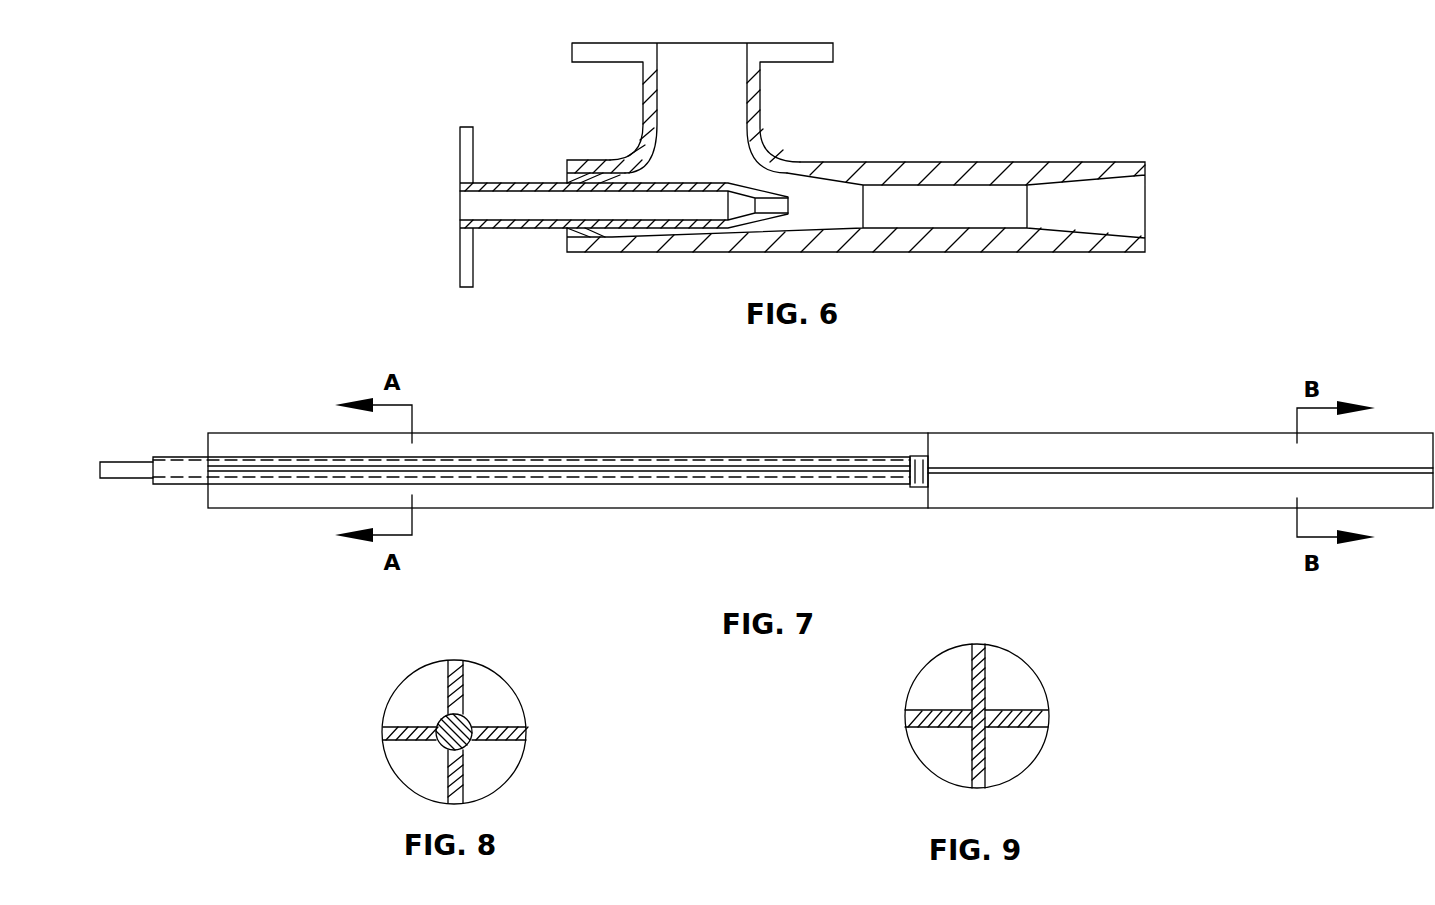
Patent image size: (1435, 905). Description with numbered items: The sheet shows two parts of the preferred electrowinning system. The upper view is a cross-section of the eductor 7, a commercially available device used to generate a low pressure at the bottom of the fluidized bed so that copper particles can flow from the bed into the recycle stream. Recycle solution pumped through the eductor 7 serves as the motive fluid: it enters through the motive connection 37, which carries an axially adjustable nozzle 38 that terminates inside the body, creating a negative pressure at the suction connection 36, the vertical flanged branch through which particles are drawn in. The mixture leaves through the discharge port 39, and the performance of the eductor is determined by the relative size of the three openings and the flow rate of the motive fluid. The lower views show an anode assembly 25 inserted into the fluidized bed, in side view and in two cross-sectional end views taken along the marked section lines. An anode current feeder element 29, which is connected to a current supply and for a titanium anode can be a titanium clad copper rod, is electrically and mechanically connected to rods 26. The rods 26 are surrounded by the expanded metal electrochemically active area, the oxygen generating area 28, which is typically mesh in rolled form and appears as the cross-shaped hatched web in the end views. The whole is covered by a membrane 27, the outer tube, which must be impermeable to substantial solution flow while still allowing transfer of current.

In FIG. 6, the eductor 7 is at (955, 70).
In FIG. 7, the anode assembly 25 is at (648, 554).
In FIG. 7, the rods 26 is at (473, 472).
In FIG. 8, the rods 26 is at (512, 740).
In FIG. 9, the rods 26 is at (1009, 710).
In FIG. 7, the membrane 27 is at (727, 433).
In FIG. 8, the membrane 27 is at (525, 697).
In FIG. 9, the membrane 27 is at (1040, 760).
In FIG. 7, the oxygen generating area 28 is at (1025, 508).
In FIG. 8, the oxygen generating area 28 is at (480, 676).
In FIG. 9, the oxygen generating area 28 is at (952, 785).
In FIG. 7, the anode current feeder element 29 is at (130, 468).
In FIG. 8, the anode current feeder element 29 is at (445, 740).
In FIG. 6, the suction connection 36 is at (697, 60).
In FIG. 6, the motive connection 37 is at (473, 207).
In FIG. 6, the axially adjustable nozzle 38 is at (528, 212).
In FIG. 6, the discharge port 39 is at (1128, 208).